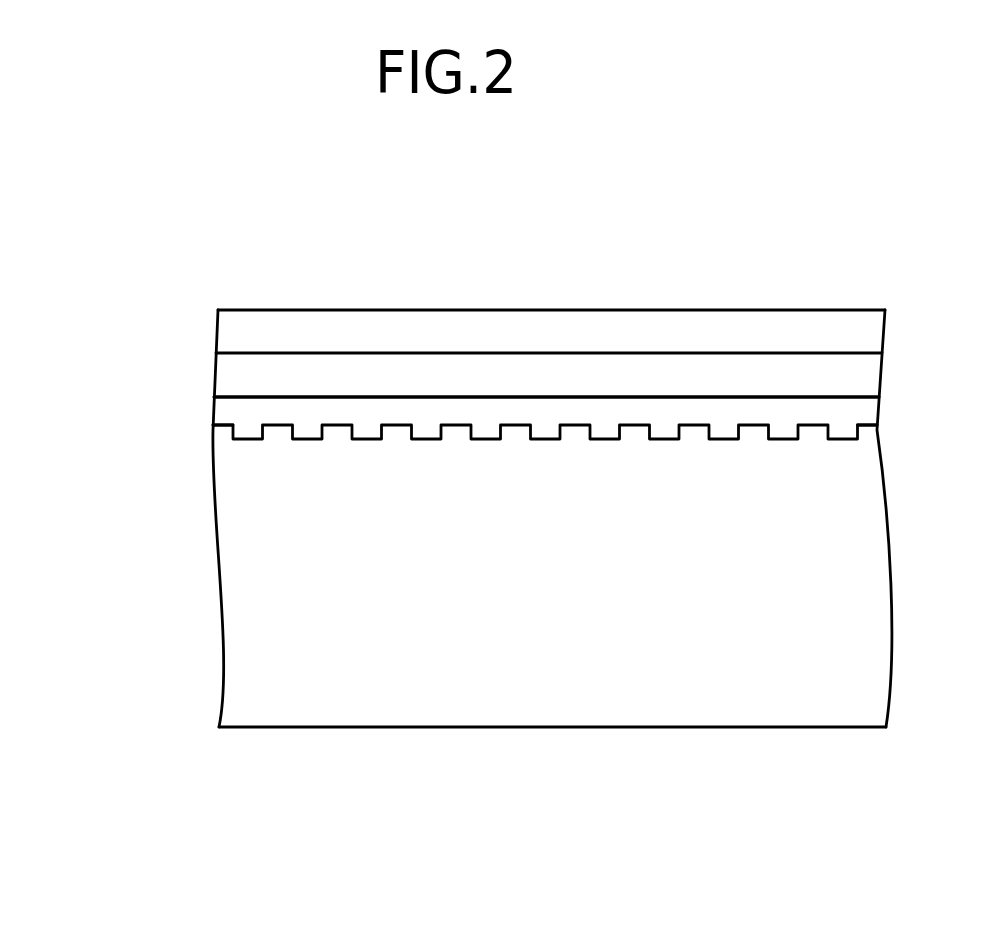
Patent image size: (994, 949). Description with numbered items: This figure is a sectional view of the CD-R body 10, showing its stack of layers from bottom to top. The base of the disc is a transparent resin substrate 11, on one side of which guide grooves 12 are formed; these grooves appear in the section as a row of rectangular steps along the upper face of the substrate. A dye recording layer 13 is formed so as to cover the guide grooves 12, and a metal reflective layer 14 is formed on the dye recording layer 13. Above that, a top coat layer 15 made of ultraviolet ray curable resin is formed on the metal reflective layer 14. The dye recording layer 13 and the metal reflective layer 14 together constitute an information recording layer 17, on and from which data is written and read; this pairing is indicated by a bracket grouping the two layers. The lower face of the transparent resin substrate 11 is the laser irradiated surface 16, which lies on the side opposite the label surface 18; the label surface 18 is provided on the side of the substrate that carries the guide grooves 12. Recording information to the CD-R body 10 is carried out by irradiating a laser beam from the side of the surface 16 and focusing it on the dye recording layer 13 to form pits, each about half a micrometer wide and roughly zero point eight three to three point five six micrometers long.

The CD-R body 10 is at (515, 242).
The transparent resin substrate 11 is at (248, 637).
The guide grooves 12 is at (282, 427).
The dye recording layer 13 is at (226, 419).
The metal reflective layer 14 is at (231, 382).
The top coat layer 15 is at (231, 332).
The surface 16 is at (315, 727).
The information recording layer 17 is at (88, 345).
The label surface 18 is at (303, 310).